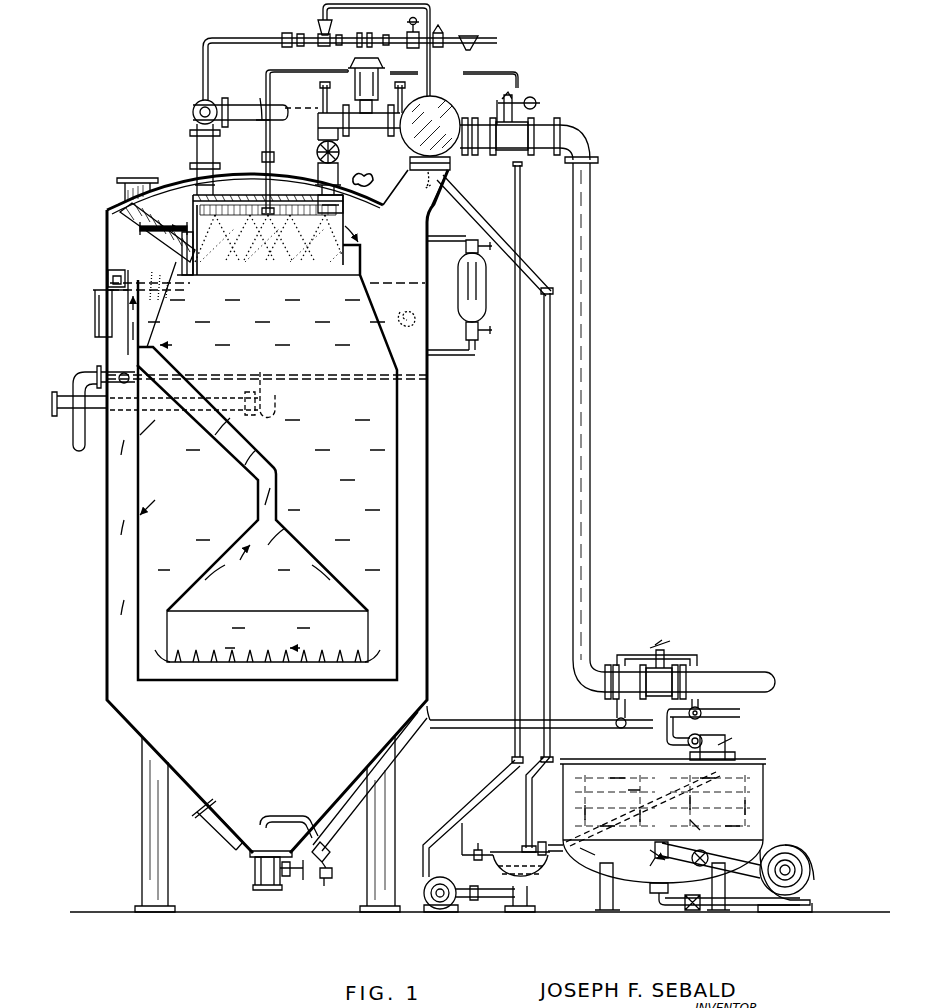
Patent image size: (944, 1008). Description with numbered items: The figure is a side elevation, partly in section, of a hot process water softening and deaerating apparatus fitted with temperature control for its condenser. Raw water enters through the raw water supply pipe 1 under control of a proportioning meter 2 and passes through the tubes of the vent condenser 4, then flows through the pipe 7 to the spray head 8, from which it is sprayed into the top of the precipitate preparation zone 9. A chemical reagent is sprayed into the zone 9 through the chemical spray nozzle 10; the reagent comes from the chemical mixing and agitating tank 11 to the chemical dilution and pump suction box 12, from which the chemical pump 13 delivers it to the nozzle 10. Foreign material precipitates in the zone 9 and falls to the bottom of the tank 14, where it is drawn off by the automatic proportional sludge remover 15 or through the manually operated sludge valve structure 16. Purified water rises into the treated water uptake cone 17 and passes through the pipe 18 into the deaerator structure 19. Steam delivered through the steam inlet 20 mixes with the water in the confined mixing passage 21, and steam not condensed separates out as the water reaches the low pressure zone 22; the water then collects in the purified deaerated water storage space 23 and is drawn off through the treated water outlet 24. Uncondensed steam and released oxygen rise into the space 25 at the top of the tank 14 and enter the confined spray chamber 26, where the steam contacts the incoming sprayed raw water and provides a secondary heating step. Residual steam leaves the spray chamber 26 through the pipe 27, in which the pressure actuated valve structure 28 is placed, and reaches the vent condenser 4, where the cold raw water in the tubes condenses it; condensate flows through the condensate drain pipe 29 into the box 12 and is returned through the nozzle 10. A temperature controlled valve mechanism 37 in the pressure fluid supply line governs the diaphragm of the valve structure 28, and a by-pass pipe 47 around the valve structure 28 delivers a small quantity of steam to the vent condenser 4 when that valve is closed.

The raw water supply pipe 1 is at (582, 270).
The proportioning meter 2 is at (685, 682).
The vent condenser 4 is at (445, 120).
The pipe 7 is at (252, 112).
The spray head 8 is at (341, 195).
The precipitate preparation zone 9 is at (397, 468).
The chemical spray nozzle 10 is at (250, 196).
The chemical mixing and agitating tank 11 is at (635, 868).
The chemical dilution and pump suction box 12 is at (536, 872).
The chemical pump 13 is at (440, 912).
The tank 14 is at (427, 540).
The automatic proportional sludge remover 15 is at (293, 818).
The manually operated sludge valve structure 16 is at (258, 872).
The treated water uptake cone 17 is at (300, 652).
The pipe 18 is at (236, 452).
The deaerator structure 19 is at (110, 268).
The steam inlet 20 is at (142, 195).
The confined mixing passage 21 is at (118, 278).
The low pressure zone 22 is at (158, 232).
The purified deaerated water storage space 23 is at (145, 333).
The treated water outlet 24 is at (76, 416).
The space 25 is at (398, 232).
The confined spray chamber 26 is at (332, 228).
The pipe 27 is at (322, 166).
The pressure actuated valve structure 28 is at (386, 74).
The condensate drain pipe 29 is at (548, 480).
The temperature controlled valve mechanism 37 is at (320, 25).
The by-pass pipe 47 is at (325, 100).